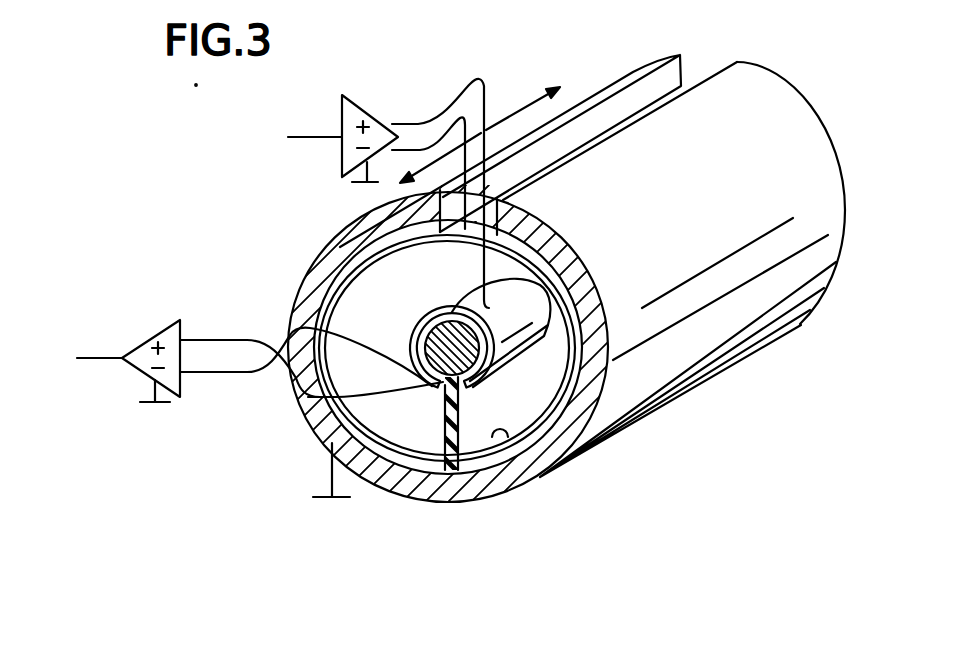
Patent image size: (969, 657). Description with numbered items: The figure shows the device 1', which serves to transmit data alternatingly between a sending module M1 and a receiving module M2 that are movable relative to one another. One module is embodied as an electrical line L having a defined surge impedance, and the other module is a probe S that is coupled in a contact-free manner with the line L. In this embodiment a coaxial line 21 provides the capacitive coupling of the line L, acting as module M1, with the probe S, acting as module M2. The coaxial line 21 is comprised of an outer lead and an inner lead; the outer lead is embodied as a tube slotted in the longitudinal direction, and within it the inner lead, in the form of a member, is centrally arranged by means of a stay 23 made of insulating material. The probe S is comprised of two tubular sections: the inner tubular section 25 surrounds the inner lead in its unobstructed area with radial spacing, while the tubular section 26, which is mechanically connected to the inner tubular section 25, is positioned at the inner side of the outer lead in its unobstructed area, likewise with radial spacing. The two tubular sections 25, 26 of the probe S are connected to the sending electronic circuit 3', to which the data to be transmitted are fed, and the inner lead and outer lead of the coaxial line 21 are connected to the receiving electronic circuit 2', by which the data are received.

The coaxial line 21 is at (764, 46).
The sending electronic circuit 3' is at (386, 135).
The receiving electronic circuit 2' is at (254, 347).
The receiving module M2 is at (417, 298).
The sending module M1 is at (393, 515).
The inner tubular section 25 is at (523, 300).
The probe S is at (455, 298).
The electrical line L is at (308, 397).
The stay 23 is at (340, 421).
The device 1' is at (397, 368).
The tubular section 26 is at (503, 430).